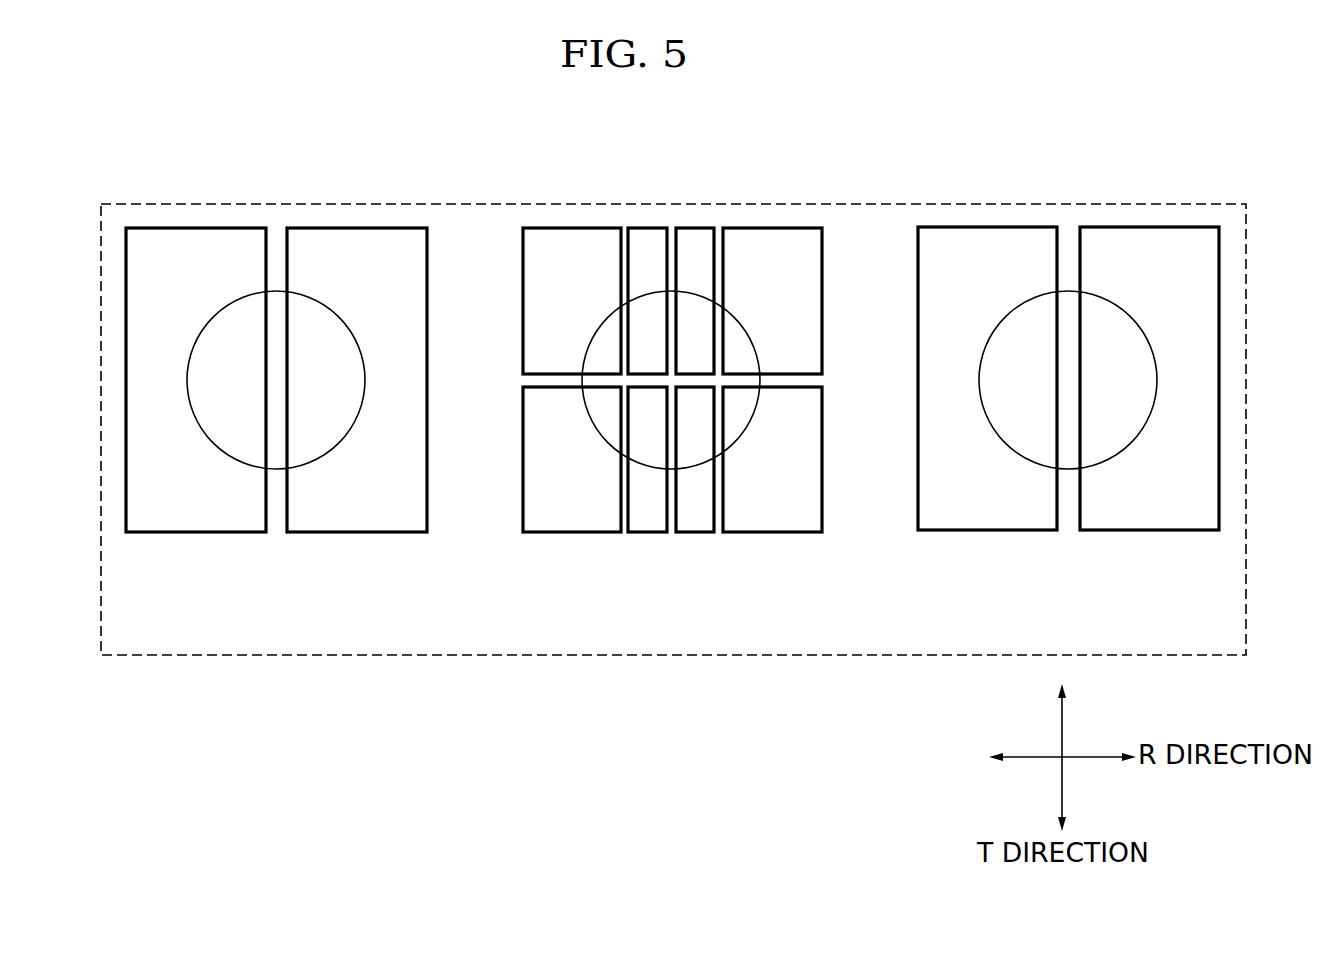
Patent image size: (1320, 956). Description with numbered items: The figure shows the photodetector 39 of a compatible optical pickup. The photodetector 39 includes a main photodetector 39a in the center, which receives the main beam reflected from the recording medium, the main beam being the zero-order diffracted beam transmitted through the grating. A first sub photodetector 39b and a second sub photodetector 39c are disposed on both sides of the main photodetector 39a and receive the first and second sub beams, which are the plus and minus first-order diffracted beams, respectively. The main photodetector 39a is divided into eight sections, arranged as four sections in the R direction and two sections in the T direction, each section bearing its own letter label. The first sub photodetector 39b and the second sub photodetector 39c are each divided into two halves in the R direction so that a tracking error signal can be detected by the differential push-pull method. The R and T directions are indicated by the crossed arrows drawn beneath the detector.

The photodetector 39 is at (1170, 203).
The main photodetector 39a is at (666, 543).
The first sub photodetector 39b is at (307, 532).
The second sub photodetector 39c is at (1107, 532).